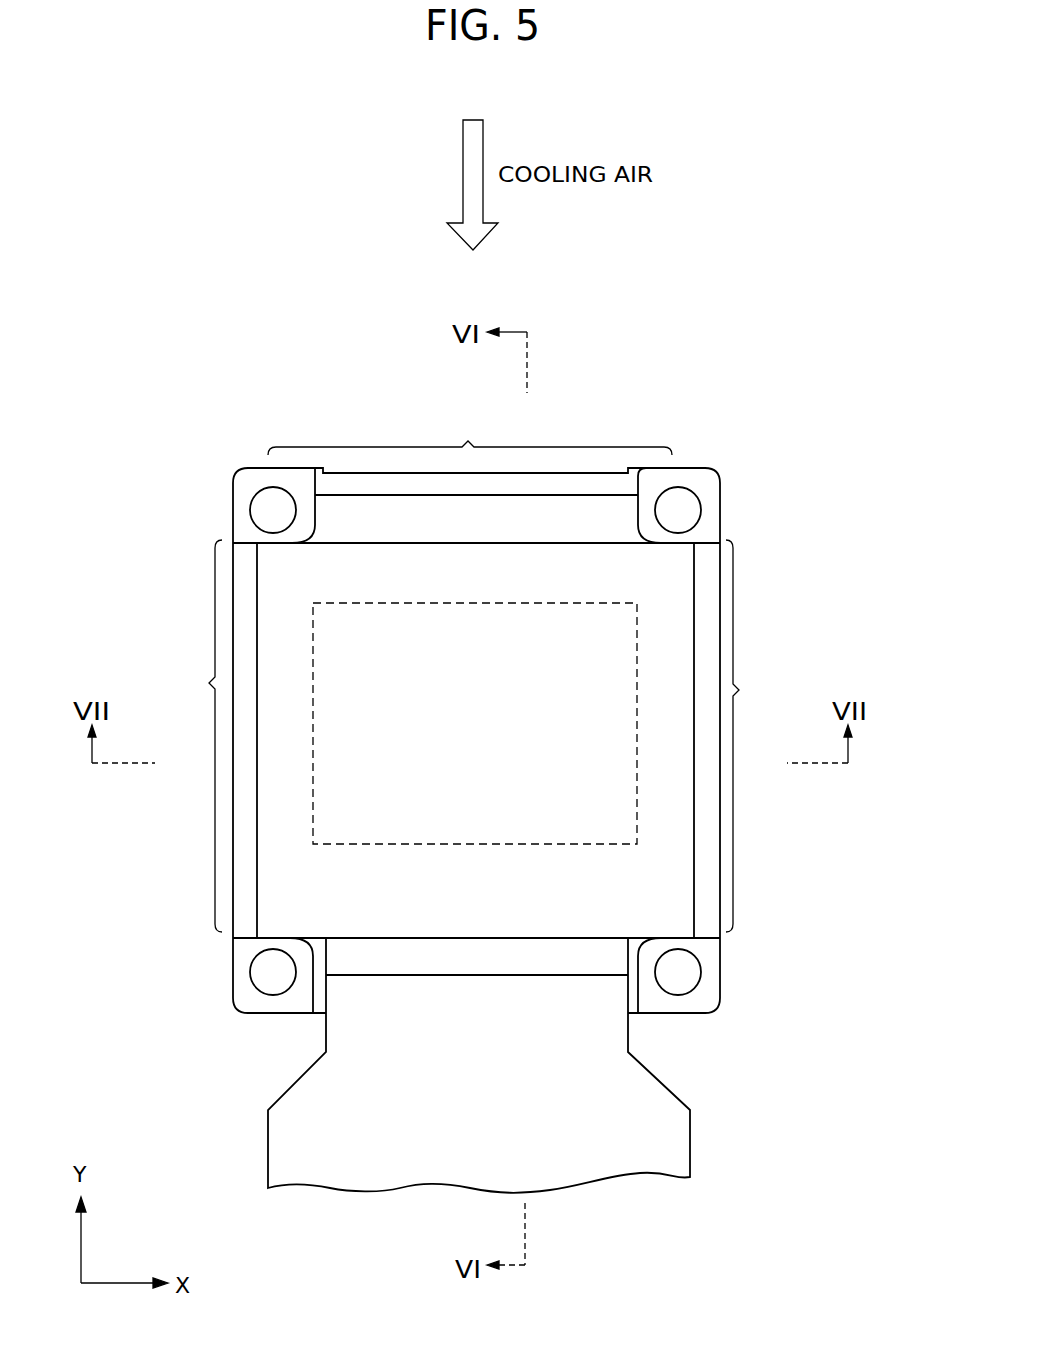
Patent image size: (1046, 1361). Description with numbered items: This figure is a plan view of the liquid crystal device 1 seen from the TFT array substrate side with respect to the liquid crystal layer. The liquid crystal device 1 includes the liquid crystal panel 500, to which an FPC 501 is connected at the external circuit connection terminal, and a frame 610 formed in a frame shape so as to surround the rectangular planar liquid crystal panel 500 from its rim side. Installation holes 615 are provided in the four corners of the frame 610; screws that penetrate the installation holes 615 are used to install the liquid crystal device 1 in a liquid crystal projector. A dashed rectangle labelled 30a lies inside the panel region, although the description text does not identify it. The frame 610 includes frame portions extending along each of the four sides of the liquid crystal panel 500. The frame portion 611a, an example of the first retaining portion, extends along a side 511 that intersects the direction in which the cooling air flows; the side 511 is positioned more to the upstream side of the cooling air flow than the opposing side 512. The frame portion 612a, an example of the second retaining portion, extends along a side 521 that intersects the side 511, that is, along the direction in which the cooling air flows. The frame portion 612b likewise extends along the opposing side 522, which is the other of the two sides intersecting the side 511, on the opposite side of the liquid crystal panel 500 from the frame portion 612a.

The liquid crystal device 1 is at (671, 326).
The liquid crystal panel 500 is at (680, 902).
The FPC 501 is at (668, 1145).
The image forming region 30a is at (353, 682).
The side 511 is at (425, 552).
The side 512 is at (473, 928).
The side 521 is at (267, 742).
The side 522 is at (686, 718).
The frame 610 is at (703, 575).
The frame portion 611a is at (470, 436).
The frame portion 612a is at (183, 736).
The frame portion 612b is at (761, 736).
The installation hole 615 is at (710, 480).